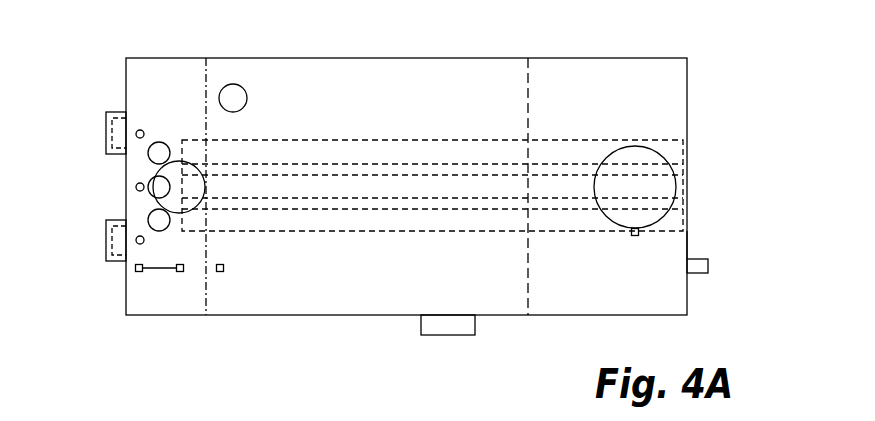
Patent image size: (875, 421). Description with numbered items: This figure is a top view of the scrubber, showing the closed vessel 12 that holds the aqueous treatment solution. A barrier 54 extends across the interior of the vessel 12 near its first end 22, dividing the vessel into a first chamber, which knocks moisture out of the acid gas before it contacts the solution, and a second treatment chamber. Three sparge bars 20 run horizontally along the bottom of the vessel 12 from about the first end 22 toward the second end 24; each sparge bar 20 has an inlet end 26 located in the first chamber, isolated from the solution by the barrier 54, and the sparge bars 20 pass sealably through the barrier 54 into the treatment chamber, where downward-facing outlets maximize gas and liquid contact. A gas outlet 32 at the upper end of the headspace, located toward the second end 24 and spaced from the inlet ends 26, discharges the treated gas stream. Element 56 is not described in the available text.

The vessel 12 is at (688, 307).
The sparge bar 20 is at (409, 155).
The first end 22 is at (126, 292).
The second end 24 is at (688, 243).
The gas outlet 32 is at (665, 159).
The barrier 54 is at (207, 83).
The connector 56 is at (97, 418).
The inlet end 26 is at (535, 418).